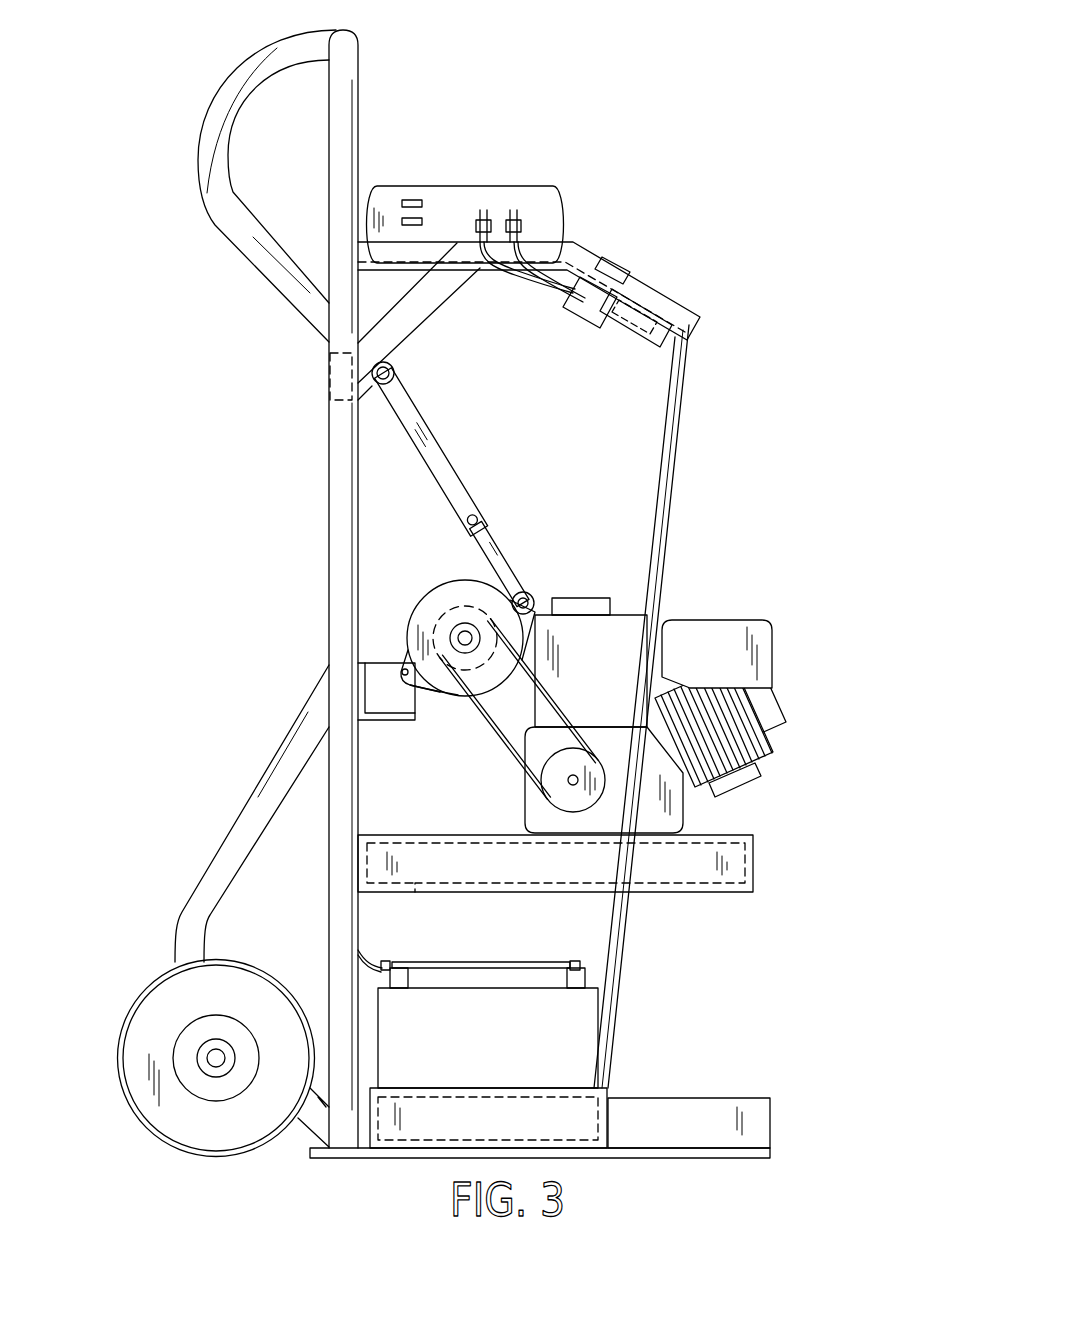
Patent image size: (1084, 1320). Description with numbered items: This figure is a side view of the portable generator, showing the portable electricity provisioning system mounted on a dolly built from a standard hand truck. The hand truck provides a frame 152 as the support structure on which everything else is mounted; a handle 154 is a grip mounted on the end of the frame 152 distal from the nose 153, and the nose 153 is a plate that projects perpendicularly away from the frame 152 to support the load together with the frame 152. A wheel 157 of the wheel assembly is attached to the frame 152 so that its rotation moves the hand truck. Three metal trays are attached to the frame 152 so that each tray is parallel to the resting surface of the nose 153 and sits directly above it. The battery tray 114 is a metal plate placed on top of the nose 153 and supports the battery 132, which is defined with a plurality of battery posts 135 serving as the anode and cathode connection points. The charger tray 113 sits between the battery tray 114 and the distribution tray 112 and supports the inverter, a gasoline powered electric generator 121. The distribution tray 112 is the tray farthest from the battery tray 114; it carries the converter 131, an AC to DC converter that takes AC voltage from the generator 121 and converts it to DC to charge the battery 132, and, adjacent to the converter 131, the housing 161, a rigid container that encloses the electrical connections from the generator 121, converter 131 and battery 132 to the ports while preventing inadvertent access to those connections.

The distribution tray 112 is at (571, 252).
The charger tray 113 is at (740, 862).
The battery tray 114 is at (768, 1128).
The generator 121 is at (627, 627).
The converter 131 is at (458, 197).
The battery 132 is at (577, 1032).
The plurality of battery posts 135 is at (567, 977).
The frame 152 is at (329, 515).
The nose 153 is at (402, 1158).
The handle 154 is at (210, 222).
The wheel 157 is at (163, 1010).
The housing 161 is at (637, 281).